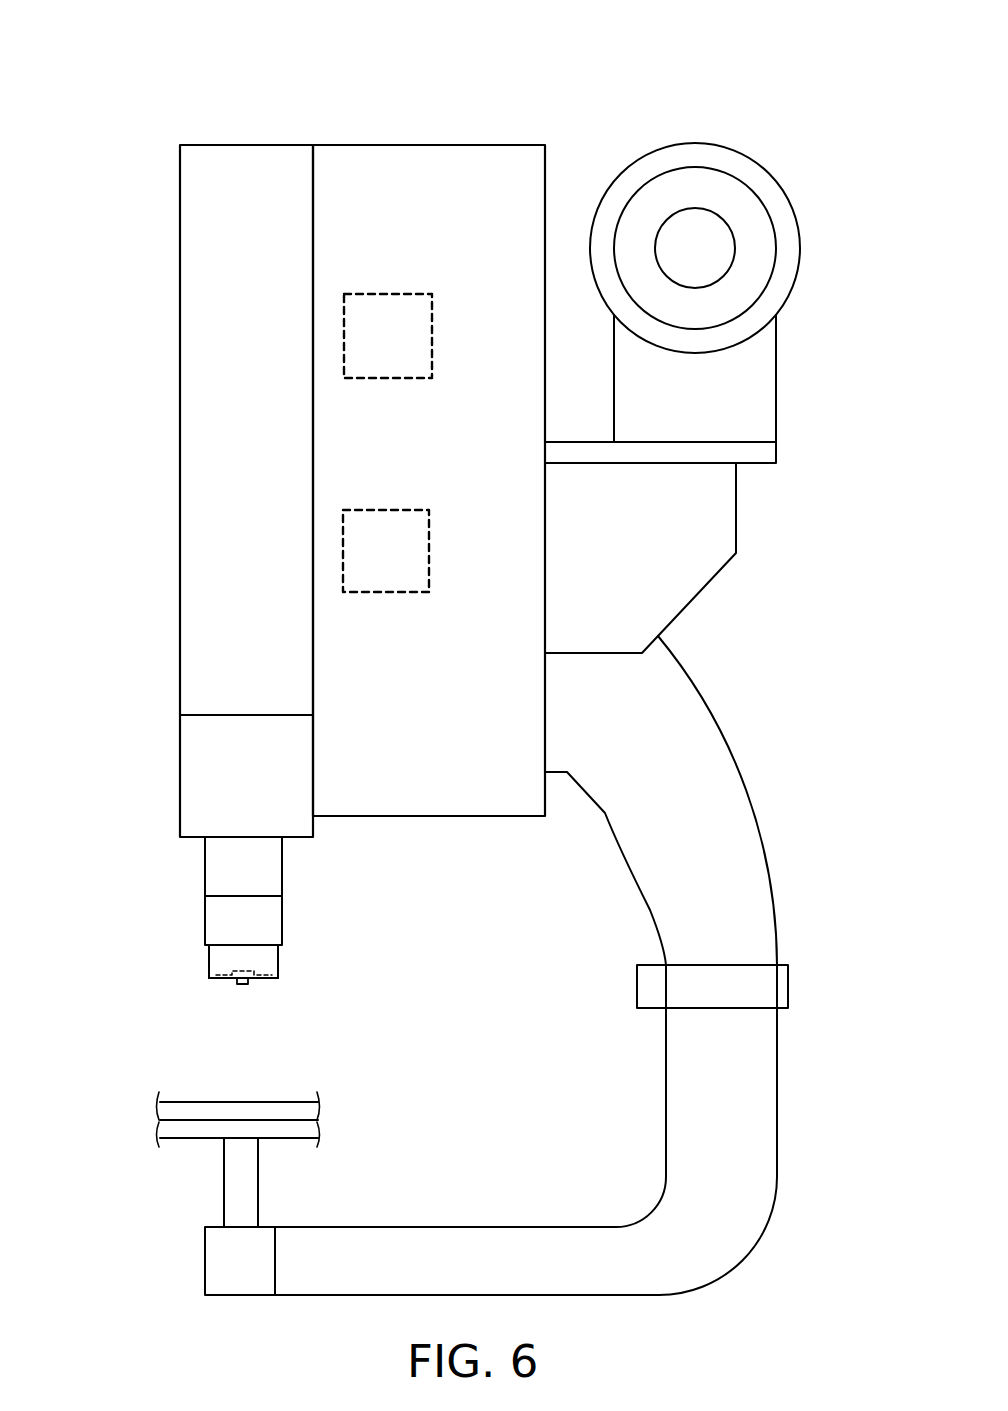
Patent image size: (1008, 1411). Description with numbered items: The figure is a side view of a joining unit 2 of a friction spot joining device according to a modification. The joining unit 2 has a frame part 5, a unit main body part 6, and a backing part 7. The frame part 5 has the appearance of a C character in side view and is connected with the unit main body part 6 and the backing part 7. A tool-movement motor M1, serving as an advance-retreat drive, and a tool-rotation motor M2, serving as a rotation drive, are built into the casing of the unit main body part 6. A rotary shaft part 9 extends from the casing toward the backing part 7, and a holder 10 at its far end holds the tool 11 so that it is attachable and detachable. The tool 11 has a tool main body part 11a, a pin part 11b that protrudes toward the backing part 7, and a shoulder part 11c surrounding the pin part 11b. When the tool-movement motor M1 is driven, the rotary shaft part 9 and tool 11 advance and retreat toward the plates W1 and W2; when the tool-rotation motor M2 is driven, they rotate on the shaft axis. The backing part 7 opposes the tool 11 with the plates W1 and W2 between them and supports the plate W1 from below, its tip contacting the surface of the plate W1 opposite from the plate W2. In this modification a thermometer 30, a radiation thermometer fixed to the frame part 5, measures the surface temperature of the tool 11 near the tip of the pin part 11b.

The joining unit 2 is at (357, 95).
The unit main body part 6 is at (180, 553).
The tool-movement motor M1 is at (385, 293).
The tool-rotation motor M2 is at (432, 550).
The rotary shaft part 9 is at (205, 880).
The holder 10 is at (205, 928).
The tool 11 is at (205, 971).
The tool main body part 11a is at (278, 968).
The pin part 11b is at (250, 983).
The shoulder part 11c is at (225, 980).
The frame part 5 is at (777, 1063).
The thermometer 30 is at (789, 981).
The backing part 7 is at (223, 1195).
The plate W1 is at (318, 1130).
The plate W2 is at (318, 1110).